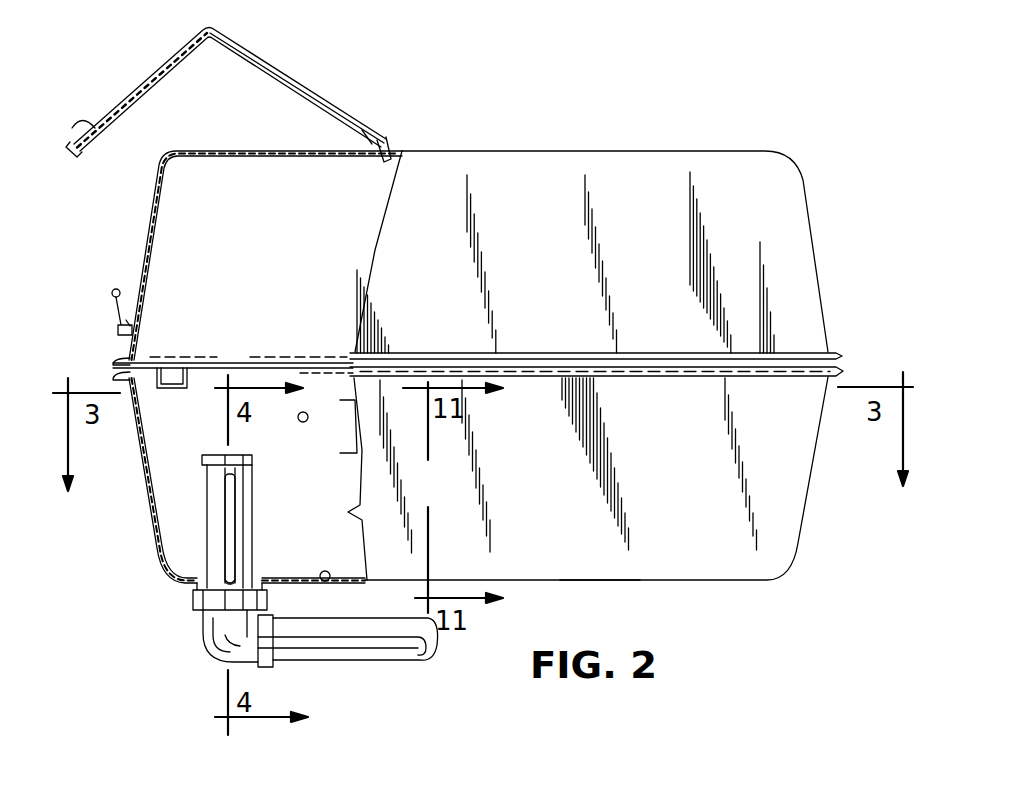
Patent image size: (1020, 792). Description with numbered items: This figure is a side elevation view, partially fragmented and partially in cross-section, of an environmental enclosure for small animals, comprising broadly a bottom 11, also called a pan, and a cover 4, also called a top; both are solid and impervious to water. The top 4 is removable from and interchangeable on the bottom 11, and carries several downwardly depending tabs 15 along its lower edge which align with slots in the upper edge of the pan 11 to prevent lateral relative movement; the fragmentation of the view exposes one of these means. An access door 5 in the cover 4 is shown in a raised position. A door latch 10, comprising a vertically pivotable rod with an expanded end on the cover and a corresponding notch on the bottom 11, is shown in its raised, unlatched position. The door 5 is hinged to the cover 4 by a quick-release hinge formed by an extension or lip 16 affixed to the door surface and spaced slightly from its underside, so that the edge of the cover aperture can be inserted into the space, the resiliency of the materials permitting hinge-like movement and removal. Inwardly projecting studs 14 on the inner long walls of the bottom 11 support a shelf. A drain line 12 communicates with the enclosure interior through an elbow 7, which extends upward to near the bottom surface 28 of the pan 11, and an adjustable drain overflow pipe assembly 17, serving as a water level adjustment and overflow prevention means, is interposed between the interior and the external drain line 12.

The cover 4 is at (553, 150).
The access door 5 is at (300, 88).
The elbow 7 is at (213, 648).
The door latch 10 is at (75, 122).
The bottom 11 is at (585, 582).
The drain line 12 is at (370, 662).
The stud 14 is at (306, 413).
The tab 15 is at (173, 377).
The extension 16 is at (370, 150).
The adjustable drain overflow pipe assembly 17 is at (207, 510).
The bottom surface 28 is at (326, 581).